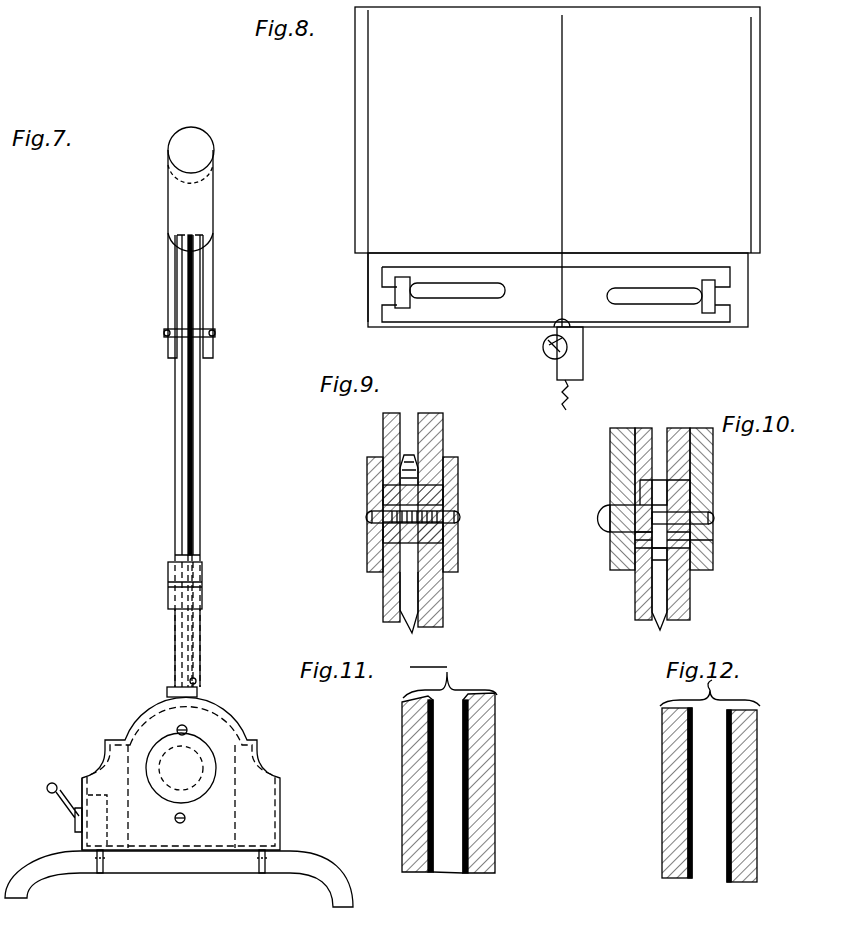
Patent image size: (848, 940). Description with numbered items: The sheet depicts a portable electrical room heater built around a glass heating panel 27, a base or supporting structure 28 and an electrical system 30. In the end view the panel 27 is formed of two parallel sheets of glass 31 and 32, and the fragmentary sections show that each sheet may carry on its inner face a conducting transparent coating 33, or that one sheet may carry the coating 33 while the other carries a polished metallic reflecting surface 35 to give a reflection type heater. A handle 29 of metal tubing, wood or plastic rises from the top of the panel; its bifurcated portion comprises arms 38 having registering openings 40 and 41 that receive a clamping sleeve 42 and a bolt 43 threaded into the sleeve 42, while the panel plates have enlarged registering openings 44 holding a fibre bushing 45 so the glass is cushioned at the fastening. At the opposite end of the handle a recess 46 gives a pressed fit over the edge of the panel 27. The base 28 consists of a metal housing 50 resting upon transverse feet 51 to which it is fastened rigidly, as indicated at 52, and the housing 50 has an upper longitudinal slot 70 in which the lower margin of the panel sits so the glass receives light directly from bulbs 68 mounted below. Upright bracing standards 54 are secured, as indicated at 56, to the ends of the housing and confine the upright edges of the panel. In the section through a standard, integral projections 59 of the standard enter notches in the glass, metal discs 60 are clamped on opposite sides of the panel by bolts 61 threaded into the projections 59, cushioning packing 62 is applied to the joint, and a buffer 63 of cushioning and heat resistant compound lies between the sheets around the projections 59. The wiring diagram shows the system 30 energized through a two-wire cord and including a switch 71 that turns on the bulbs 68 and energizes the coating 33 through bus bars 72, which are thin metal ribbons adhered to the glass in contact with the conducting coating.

In FIG. 7, the glass heating panel 27 is at (175, 498).
In FIG. 7, the base or supporting structure 28 is at (262, 765).
In FIG. 7, the handle 29 is at (214, 172).
In FIG. 8, the electrical system 30 is at (360, 293).
In FIG. 7, the sheet of glass 31 is at (195, 477).
In FIG. 9, the sheet of glass 31 is at (443, 420).
In FIG. 10, the sheet of glass 31 is at (678, 524).
In FIG. 11, the sheet of glass 31 is at (495, 746).
In FIG. 12, the sheet of glass 31 is at (757, 792).
In FIG. 7, the sheet of glass 32 is at (180, 428).
In FIG. 9, the sheet of glass 32 is at (383, 428).
In FIG. 10, the sheet of glass 32 is at (643, 524).
In FIG. 11, the sheet of glass 32 is at (402, 739).
In FIG. 12, the sheet of glass 32 is at (662, 770).
In FIG. 7, the conducting transparent coating 33 is at (190, 428).
In FIG. 9, the conducting transparent coating 33 is at (412, 633).
In FIG. 10, the conducting transparent coating 33 is at (660, 630).
In FIG. 11, the conducting transparent coating 33 is at (456, 876).
In FIG. 12, the conducting transparent coating 33 is at (729, 884).
In FIG. 12, the polished metallic reflecting surface 35 is at (688, 880).
In FIG. 7, the arms 38 is at (172, 300).
In FIG. 10, the arms 38 is at (735, 455).
In FIG. 10, the opening 40 is at (622, 512).
In FIG. 10, the opening 41 is at (700, 518).
In FIG. 7, the clamping sleeve 42 is at (164, 333).
In FIG. 10, the clamping sleeve 42 is at (620, 526).
In FIG. 10, the bolt 43 is at (713, 536).
In FIG. 10, the enlarged registering openings 44 is at (690, 542).
In FIG. 10, the fibre bushing 45 is at (682, 500).
In FIG. 7, the recess 46 is at (191, 236).
In FIG. 7, the metal housing 50 is at (268, 825).
In FIG. 7, the transverse feet 51 is at (338, 890).
In FIG. 7, the fasteners 52 is at (236, 882).
In FIG. 7, the upright bracing standards 54 is at (200, 645).
In FIG. 7, the fastening of standards 56 is at (178, 730).
In FIG. 9, the integral projections 59 is at (440, 533).
In FIG. 9, the metal discs 60 is at (340, 592).
In FIG. 9, the bolts 61 is at (365, 517).
In FIG. 9, the cushioning packing 62 is at (435, 483).
In FIG. 9, the buffer 63 is at (412, 455).
In FIG. 8, the light bulbs 68 is at (593, 283).
In FIG. 7, the upper longitudinal slot 70 is at (196, 681).
In FIG. 7, the switch 71 is at (47, 790).
In FIG. 8, the switch 71 is at (567, 352).
In FIG. 8, the bus bars 72 is at (751, 103).